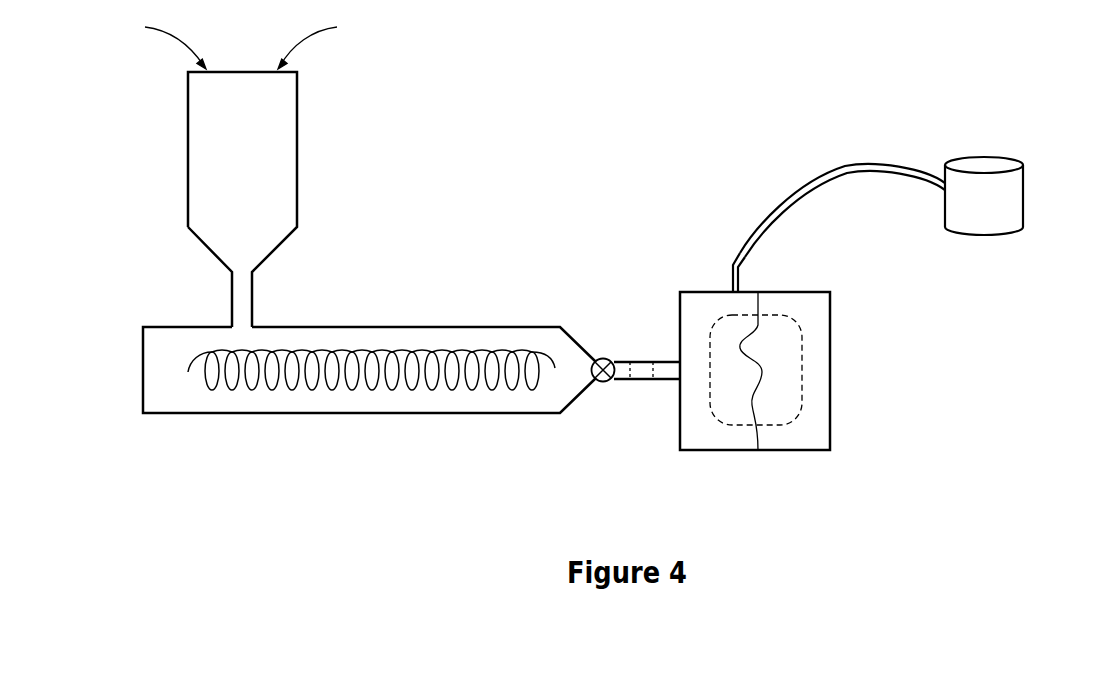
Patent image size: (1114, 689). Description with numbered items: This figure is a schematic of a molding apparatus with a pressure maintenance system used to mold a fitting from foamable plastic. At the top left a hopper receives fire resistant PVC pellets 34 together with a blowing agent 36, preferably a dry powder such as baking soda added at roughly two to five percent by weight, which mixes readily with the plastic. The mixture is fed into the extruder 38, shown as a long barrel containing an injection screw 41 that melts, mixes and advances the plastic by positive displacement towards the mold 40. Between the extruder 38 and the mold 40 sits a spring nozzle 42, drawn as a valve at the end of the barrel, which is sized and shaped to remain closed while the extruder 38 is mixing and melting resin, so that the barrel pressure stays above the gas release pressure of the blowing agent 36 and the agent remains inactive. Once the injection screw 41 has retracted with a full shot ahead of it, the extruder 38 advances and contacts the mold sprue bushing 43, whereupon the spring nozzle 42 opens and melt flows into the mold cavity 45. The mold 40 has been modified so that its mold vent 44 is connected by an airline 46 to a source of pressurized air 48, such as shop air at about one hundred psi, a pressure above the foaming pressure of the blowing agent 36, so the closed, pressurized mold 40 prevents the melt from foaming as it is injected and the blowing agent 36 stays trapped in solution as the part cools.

The fire resistant PVC pellets 34 is at (297, 180).
The blowing agent 36 is at (317, 38).
The extruder 38 is at (168, 38).
The mold 40 is at (700, 292).
The injection screw 41 is at (338, 383).
The spring nozzle 42 is at (603, 381).
The mold sprue bushing 43 is at (655, 380).
The mold vent 44 is at (740, 277).
The mold cavity 45 is at (802, 348).
The airline 46 is at (783, 193).
The source of pressurized air 48 is at (1020, 188).